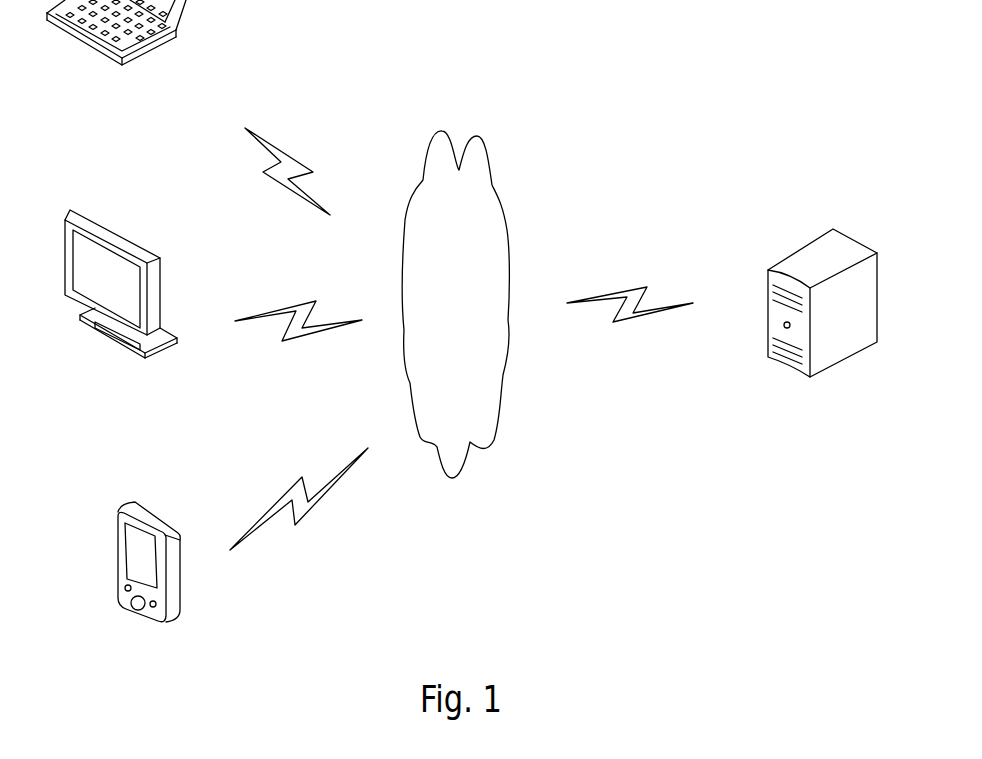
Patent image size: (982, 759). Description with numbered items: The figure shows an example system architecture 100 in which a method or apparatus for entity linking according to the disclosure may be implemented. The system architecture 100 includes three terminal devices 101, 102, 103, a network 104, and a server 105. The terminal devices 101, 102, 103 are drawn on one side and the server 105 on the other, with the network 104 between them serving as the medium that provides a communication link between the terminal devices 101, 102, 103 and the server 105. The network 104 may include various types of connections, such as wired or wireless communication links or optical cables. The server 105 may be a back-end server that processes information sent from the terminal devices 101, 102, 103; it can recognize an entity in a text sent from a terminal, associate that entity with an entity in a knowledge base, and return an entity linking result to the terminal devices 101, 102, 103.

The system architecture 100 is at (620, 32).
The terminal device 101 is at (149, 583).
The terminal device 102 is at (121, 304).
The terminal device 103 is at (116, 56).
The network 104 is at (455, 304).
The server 105 is at (822, 327).